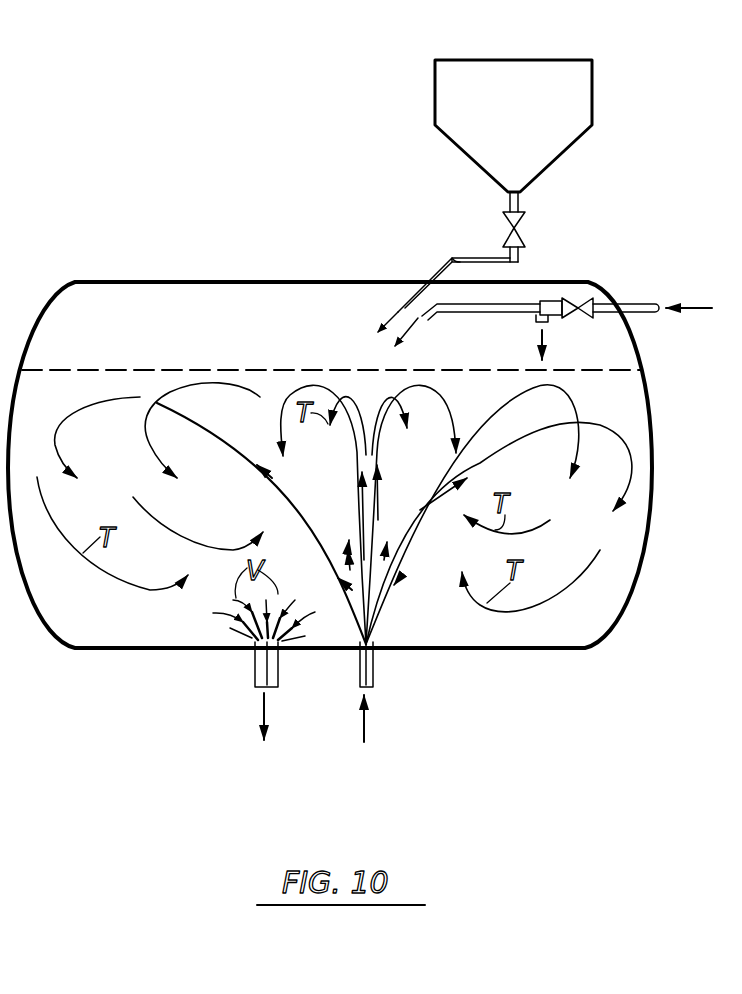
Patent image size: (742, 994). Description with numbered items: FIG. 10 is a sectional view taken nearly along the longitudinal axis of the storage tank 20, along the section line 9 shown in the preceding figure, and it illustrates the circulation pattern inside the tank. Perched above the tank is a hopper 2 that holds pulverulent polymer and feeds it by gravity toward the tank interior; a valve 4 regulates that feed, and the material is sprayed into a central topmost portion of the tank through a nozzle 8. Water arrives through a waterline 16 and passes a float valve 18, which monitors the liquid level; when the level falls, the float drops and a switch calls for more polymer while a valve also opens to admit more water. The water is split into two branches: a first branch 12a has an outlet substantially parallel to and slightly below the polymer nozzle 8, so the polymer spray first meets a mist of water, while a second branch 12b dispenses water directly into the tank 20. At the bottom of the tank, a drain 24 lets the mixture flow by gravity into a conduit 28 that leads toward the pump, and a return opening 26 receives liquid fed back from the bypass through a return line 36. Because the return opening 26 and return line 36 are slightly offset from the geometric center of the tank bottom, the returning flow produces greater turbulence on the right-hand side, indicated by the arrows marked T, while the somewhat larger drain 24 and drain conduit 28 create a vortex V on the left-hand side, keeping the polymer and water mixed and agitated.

The hopper 2 is at (528, 110).
The valve 4 is at (522, 228).
The nozzle 8 is at (405, 298).
The section line 9 is at (383, 280).
The first branch 12a is at (423, 317).
The second branch 12b is at (545, 323).
The waterline 16 is at (641, 305).
The float valve 18 is at (586, 312).
The tank 20 is at (186, 196).
The drain 24 is at (255, 641).
The return opening 26 is at (368, 643).
The conduit 28 is at (255, 675).
The return line 36 is at (375, 667).